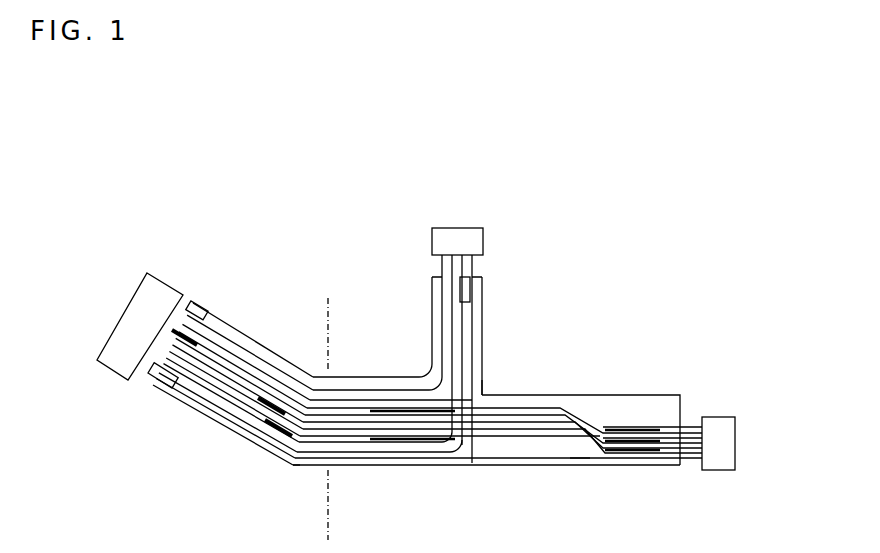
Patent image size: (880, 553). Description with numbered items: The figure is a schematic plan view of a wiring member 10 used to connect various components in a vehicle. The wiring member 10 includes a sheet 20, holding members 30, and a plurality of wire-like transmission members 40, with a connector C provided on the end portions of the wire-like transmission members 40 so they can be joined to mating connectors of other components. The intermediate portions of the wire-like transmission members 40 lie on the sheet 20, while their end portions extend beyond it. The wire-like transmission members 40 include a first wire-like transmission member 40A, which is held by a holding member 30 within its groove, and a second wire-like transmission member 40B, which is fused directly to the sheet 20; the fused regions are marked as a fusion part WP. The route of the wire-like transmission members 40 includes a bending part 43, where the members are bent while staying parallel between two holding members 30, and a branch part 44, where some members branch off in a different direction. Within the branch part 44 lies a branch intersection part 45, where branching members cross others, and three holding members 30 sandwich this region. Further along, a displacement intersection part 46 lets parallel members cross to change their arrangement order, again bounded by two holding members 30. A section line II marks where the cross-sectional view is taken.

The wiring member 10 is at (246, 196).
The sheet 20 is at (577, 394).
The holding member 30 is at (172, 390).
The wire-like transmission member 40 is at (497, 400).
The first wire-like transmission member 40A is at (383, 458).
The second wire-like transmission member 40B is at (358, 398).
The bending part 43 is at (303, 470).
The branch part 44 is at (490, 386).
The branch intersection part 45 is at (468, 456).
The displacement intersection part 46 is at (578, 457).
The connector C is at (103, 373).
The fusion part WP is at (203, 300).
The II-II line II is at (325, 298).